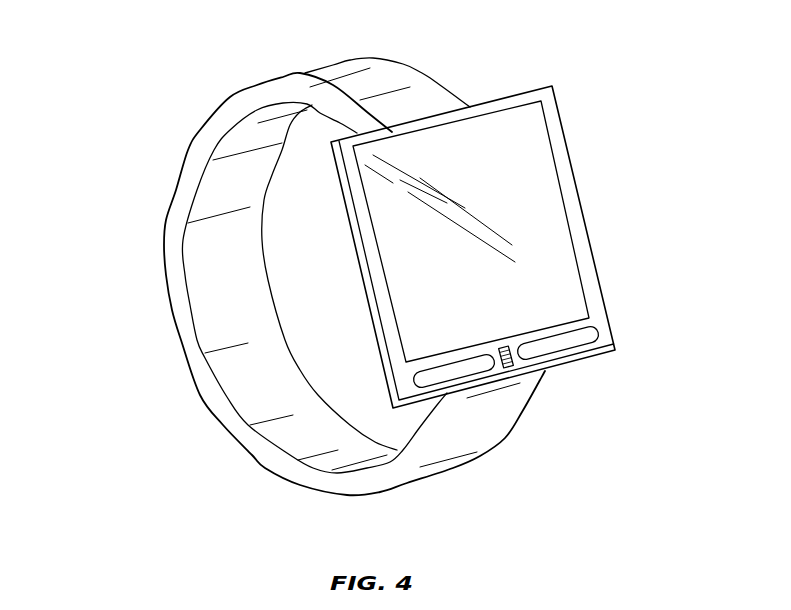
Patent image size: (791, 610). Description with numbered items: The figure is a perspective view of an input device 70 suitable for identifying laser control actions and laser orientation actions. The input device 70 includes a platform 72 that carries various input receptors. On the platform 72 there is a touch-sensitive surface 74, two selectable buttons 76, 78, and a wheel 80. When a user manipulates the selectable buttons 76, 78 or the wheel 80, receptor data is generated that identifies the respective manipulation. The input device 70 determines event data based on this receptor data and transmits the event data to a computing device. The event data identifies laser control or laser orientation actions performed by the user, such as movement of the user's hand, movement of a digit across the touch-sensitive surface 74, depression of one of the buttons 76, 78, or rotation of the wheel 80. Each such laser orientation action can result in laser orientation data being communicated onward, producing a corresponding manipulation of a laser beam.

The input device 70 is at (182, 64).
The platform 72 is at (568, 153).
The touch-sensitive surface 74 is at (537, 202).
The selectable button 76 is at (462, 372).
The selectable button 78 is at (565, 345).
The wheel 80 is at (512, 365).